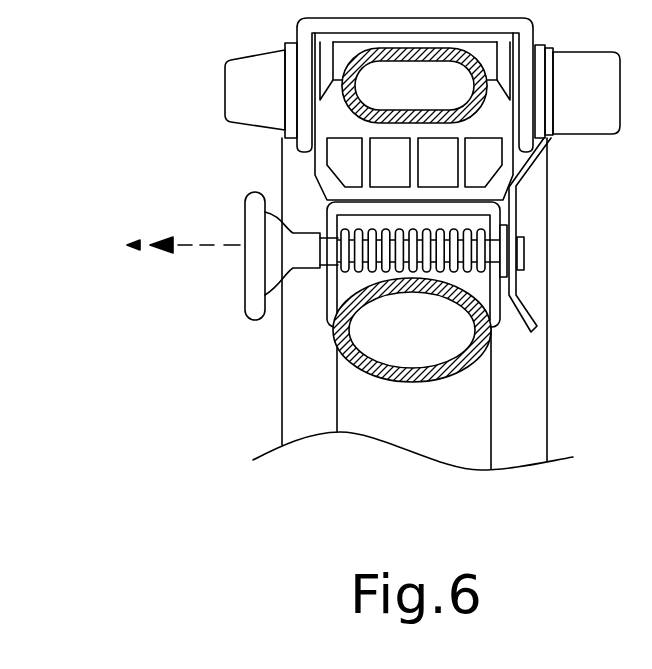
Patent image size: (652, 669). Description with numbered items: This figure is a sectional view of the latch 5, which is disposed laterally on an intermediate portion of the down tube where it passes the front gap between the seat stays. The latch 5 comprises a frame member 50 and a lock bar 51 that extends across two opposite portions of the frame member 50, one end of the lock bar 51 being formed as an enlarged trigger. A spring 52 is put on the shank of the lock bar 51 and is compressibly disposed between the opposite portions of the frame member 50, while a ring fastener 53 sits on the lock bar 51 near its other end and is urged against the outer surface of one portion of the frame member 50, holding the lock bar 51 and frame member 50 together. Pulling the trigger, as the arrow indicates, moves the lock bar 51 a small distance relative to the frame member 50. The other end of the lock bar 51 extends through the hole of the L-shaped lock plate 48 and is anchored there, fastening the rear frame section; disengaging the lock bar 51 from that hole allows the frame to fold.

The latch 5 is at (205, 342).
The lock plate 48 is at (512, 287).
The frame member 50 is at (332, 297).
The lock bar 51 is at (522, 255).
The spring 52 is at (443, 245).
The ring fastener 53 is at (505, 280).